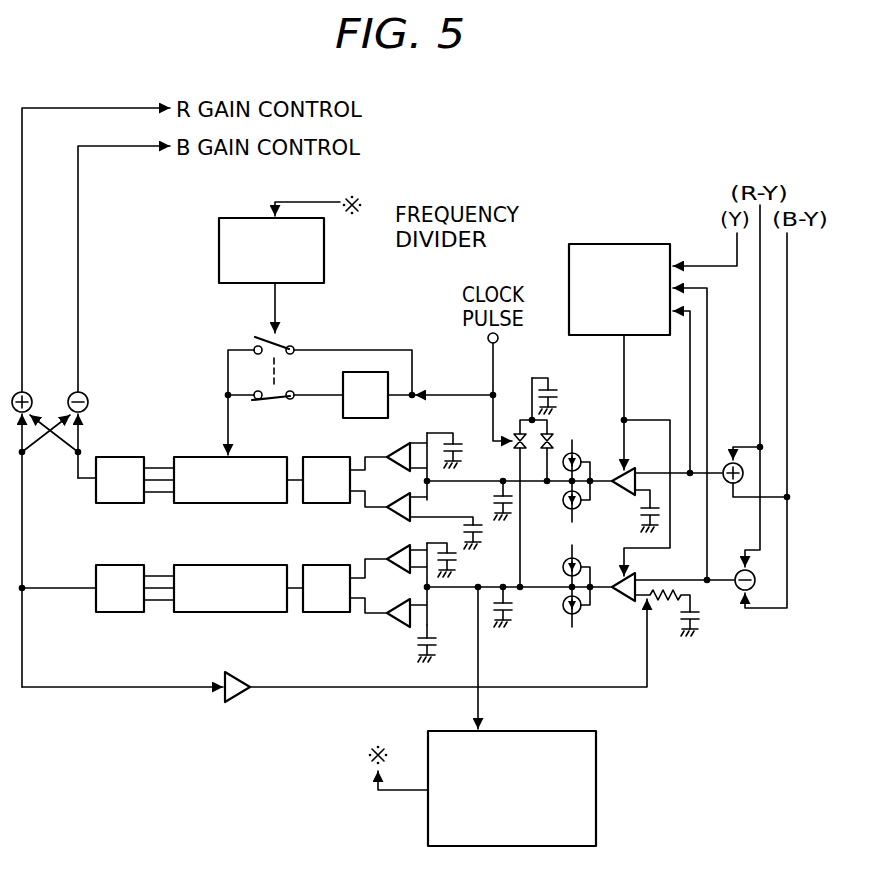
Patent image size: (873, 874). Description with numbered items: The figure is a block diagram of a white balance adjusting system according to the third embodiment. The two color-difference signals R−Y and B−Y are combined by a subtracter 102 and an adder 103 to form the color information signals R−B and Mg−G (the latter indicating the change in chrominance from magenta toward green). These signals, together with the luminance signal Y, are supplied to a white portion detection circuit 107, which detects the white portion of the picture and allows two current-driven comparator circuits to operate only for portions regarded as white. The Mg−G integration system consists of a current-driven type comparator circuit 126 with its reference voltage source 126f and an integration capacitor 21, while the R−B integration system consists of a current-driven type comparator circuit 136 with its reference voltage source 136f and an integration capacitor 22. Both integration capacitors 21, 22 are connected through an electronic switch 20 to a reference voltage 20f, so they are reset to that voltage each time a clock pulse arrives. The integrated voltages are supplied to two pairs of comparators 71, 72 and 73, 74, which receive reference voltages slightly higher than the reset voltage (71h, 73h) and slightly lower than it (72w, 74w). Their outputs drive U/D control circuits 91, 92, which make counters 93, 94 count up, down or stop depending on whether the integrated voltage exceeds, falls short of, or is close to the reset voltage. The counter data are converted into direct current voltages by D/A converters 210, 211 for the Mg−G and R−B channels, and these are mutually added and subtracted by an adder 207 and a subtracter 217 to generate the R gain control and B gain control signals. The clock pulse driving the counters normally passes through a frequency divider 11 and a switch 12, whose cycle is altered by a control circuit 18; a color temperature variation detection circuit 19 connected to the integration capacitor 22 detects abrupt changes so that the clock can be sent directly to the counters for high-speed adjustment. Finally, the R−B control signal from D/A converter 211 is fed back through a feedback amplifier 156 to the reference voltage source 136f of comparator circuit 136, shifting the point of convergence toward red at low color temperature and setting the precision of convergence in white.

The control circuit 18 is at (324, 252).
The frequency divider 11 is at (368, 372).
The switch 12 is at (278, 372).
The adder 207 is at (31, 394).
The subtracter 217 is at (87, 394).
The D/A converter 210 is at (122, 457).
The D/A converter 211 is at (122, 565).
The counter 93 is at (245, 457).
The counter 94 is at (244, 565).
The U/D control circuit 91 is at (322, 457).
The U/D control circuit 92 is at (322, 565).
The comparator 71 is at (396, 453).
The comparator 72 is at (395, 503).
The comparator 73 is at (395, 556).
The comparator 74 is at (395, 612).
The reference voltage 71h is at (463, 445).
The reference voltage 72w is at (484, 503).
The reference voltage 73h is at (452, 557).
The reference voltage 74w is at (418, 645).
The integration capacitor 21 is at (500, 494).
The integration capacitor 22 is at (512, 607).
The electronic switch 20 is at (552, 438).
The reference voltage 20f is at (571, 372).
The white portion detection circuit 107 is at (628, 244).
The current-driven type comparator circuit 126 is at (639, 468).
The current-driven type comparator circuit 136 is at (612, 582).
The reference voltage source 126f is at (661, 513).
The reference voltage source 136f is at (700, 615).
The adder 103 is at (732, 458).
The subtracter 102 is at (740, 568).
The feedback amplifier 156 is at (240, 678).
The color temperature variation detection circuit 19 is at (600, 758).